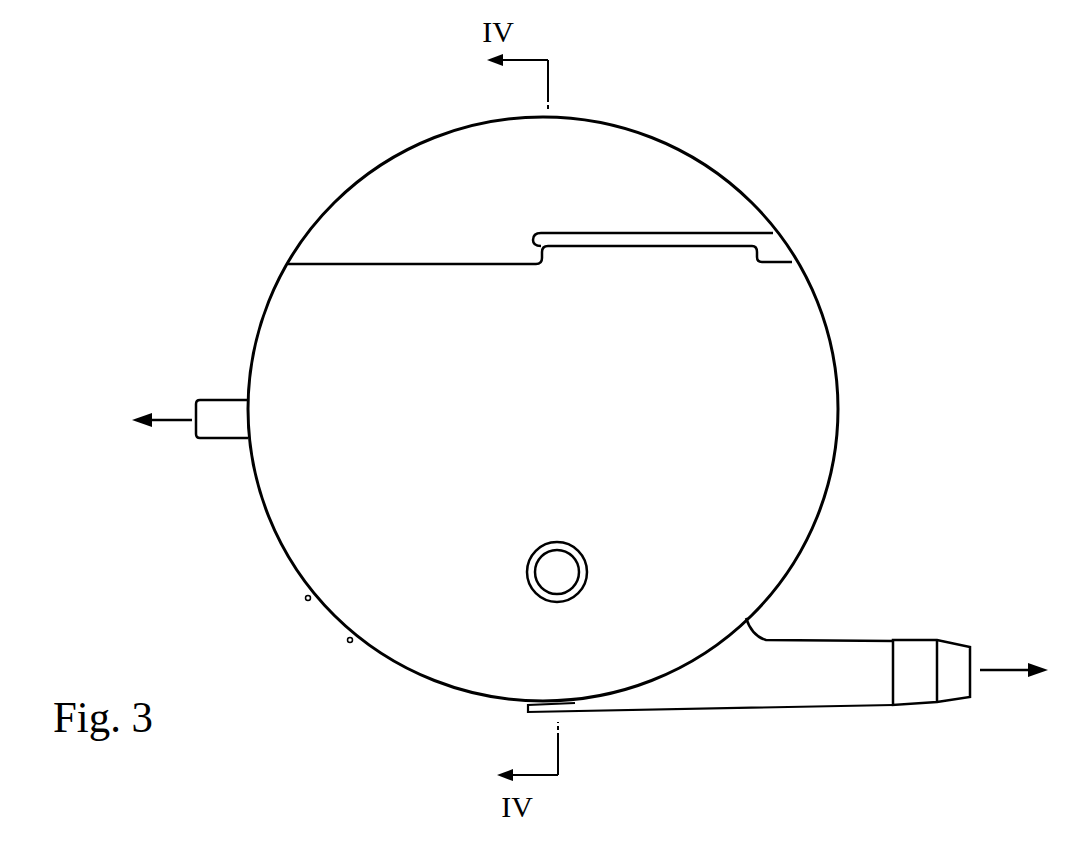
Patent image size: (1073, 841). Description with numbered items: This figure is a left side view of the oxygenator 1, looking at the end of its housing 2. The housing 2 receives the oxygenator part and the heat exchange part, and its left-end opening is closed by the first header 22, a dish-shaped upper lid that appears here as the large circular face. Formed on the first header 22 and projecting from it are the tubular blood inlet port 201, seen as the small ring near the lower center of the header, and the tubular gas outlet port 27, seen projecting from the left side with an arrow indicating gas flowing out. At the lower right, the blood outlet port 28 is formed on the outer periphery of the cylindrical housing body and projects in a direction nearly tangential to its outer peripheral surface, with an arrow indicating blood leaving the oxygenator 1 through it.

The oxygenator 1 is at (590, 402).
The housing 2 is at (744, 188).
The first header 22 is at (643, 158).
The gas outlet port 27 is at (222, 420).
The blood outlet port 28 is at (840, 641).
The blood inlet port 201 is at (526, 595).